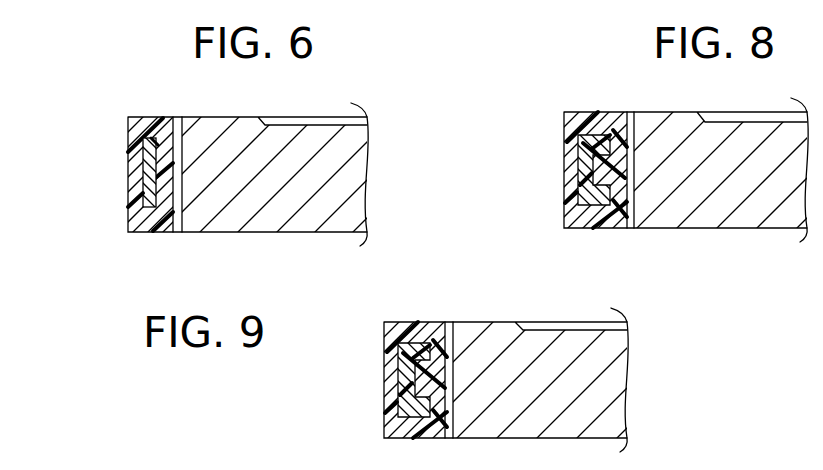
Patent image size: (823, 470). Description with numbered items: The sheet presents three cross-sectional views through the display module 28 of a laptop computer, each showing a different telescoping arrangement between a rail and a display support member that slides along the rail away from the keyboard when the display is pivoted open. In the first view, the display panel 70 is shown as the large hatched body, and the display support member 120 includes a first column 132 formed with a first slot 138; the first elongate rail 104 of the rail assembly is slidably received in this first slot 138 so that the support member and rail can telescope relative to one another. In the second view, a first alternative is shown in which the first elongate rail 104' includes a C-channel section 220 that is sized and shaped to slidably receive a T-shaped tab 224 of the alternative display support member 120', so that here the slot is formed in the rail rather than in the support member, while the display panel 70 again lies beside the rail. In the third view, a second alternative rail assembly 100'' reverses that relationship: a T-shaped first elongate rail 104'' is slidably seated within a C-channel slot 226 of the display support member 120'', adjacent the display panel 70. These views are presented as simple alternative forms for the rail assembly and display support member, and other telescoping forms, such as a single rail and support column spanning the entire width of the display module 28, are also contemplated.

In FIG. 6, the display module 28 is at (70, 188).
In FIG. 8, the display module 28 is at (730, 259).
In FIG. 6, the display panel 70 is at (242, 143).
In FIG. 8, the display panel 70 is at (747, 147).
In FIG. 9, the display panel 70 is at (558, 357).
In FIG. 6, the first elongate rail 104 is at (188, 149).
In FIG. 8, the first elongate rail 104' is at (588, 170).
In FIG. 9, the T-shaped first elongate rail 104'' is at (408, 380).
In FIG. 6, the display support member 120 is at (145, 140).
In FIG. 8, the display support member 120' is at (603, 133).
In FIG. 9, the display support member 120'' is at (425, 343).
In FIG. 6, the first column 132 is at (128, 167).
In FIG. 6, the first slot 138 is at (143, 207).
In FIG. 8, the T-shaped tab 224 is at (587, 155).
In FIG. 8, the C-channel section 220 is at (580, 207).
In FIG. 9, the C-channel slot 226 is at (407, 337).
In FIG. 9, the rail assembly 100'' is at (452, 380).